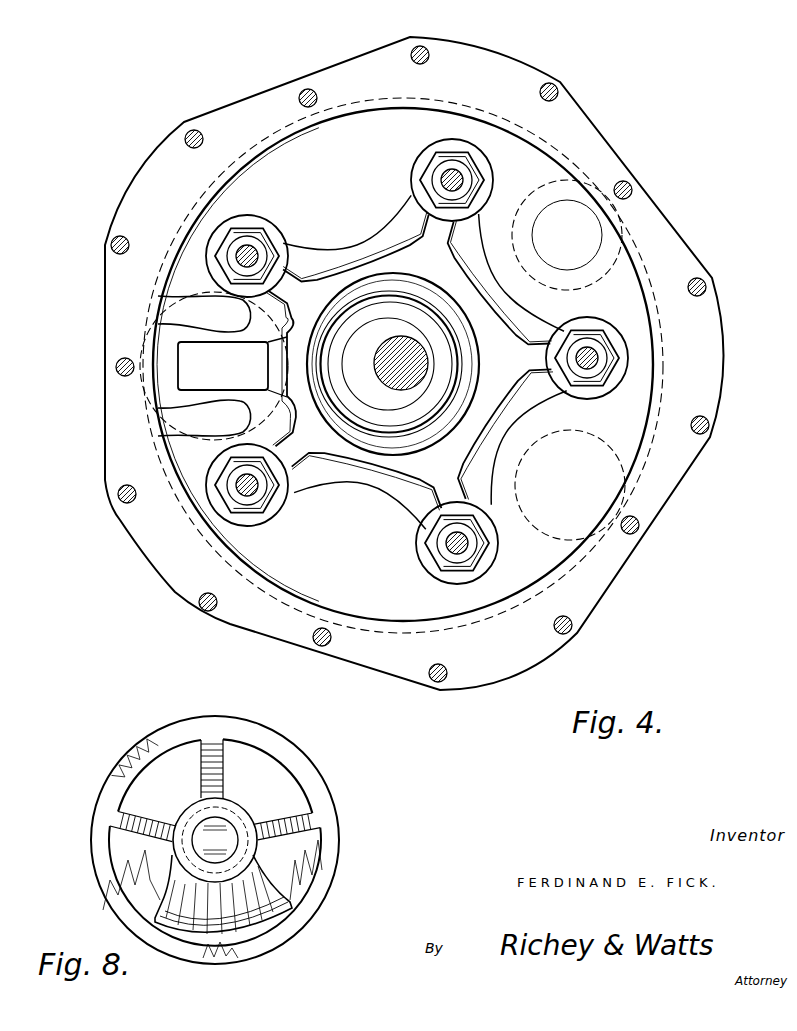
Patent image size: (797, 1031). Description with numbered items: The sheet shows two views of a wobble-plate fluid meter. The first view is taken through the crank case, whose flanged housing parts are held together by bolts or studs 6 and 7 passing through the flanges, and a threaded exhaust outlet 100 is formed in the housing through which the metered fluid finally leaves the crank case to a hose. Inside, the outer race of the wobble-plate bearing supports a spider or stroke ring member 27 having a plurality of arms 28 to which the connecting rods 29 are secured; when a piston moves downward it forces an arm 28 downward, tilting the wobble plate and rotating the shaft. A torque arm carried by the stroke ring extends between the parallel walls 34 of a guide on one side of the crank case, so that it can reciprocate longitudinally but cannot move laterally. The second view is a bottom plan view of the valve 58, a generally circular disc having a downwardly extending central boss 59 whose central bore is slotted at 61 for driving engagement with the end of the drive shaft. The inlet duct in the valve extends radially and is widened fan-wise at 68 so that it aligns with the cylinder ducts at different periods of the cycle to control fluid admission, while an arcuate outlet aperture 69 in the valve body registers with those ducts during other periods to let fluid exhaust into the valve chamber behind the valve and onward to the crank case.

In FIG. 4, the bolts or studs 6 is at (700, 272).
In FIG. 4, the bolts or studs 7 is at (633, 527).
In FIG. 4, the spider or stroke ring member 27 is at (362, 453).
In FIG. 4, the arms 28 is at (408, 220).
In FIG. 4, the connecting rods 29 is at (252, 492).
In FIG. 4, the walls of the guide 34 is at (198, 318).
In FIG. 4, the exhaust outlet 100 is at (588, 222).
In FIG. 8, the valve 58 is at (325, 832).
In FIG. 8, the central boss 59 is at (237, 807).
In FIG. 8, the slot 61 is at (225, 770).
In FIG. 8, the fan-wise widened portion of the inlet duct 68 is at (297, 900).
In FIG. 8, the arcuate outlet aperture 69 is at (170, 763).